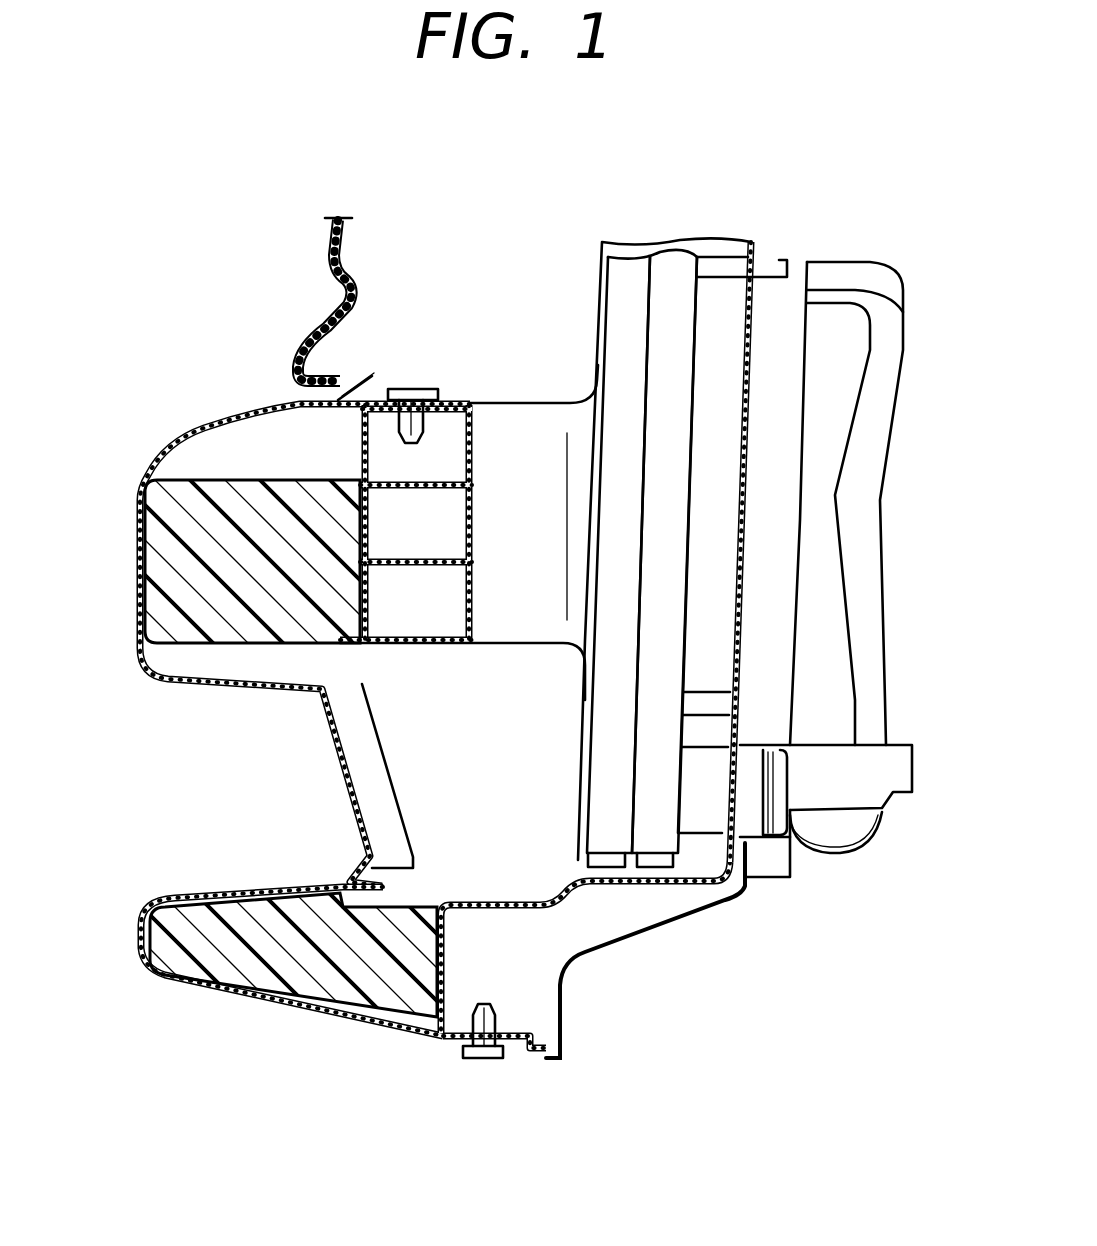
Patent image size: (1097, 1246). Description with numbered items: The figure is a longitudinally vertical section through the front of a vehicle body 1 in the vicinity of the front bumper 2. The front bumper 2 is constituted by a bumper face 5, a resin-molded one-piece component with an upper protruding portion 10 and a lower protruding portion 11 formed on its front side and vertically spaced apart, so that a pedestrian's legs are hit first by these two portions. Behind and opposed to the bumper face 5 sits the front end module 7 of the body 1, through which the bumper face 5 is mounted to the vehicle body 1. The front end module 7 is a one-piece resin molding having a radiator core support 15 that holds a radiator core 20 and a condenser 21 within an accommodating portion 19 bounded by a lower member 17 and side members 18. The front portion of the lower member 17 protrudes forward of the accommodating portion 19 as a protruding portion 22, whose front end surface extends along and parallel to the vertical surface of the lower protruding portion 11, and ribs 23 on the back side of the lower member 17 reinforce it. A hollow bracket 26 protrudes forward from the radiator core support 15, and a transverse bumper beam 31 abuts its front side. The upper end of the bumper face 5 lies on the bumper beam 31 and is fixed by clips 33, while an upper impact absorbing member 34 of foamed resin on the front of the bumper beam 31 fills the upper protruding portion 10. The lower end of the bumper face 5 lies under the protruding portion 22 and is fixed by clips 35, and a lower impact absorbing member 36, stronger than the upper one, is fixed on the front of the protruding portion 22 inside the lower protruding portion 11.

The vehicle body 1 is at (827, 177).
The front bumper 2 is at (137, 443).
The bumper face 5 is at (250, 413).
The front end module 7 is at (770, 212).
The upper protruding portion 10 is at (132, 553).
The lower protruding portion 11 is at (140, 938).
The radiator core support 15 is at (772, 540).
The lower member 17 is at (567, 897).
The side member 18 is at (727, 262).
The accommodating portion 19 is at (703, 873).
The radiator core 20 is at (680, 272).
The condenser 21 is at (628, 275).
The protruding portion 22 is at (490, 905).
The rib 23 is at (537, 1000).
The hollow bracket 26 is at (525, 440).
The bumper beam 31 is at (461, 400).
The clip 33 is at (411, 392).
The upper impact absorbing member 34 is at (192, 497).
The clip 35 is at (480, 1060).
The lower impact absorbing member 36 is at (272, 978).